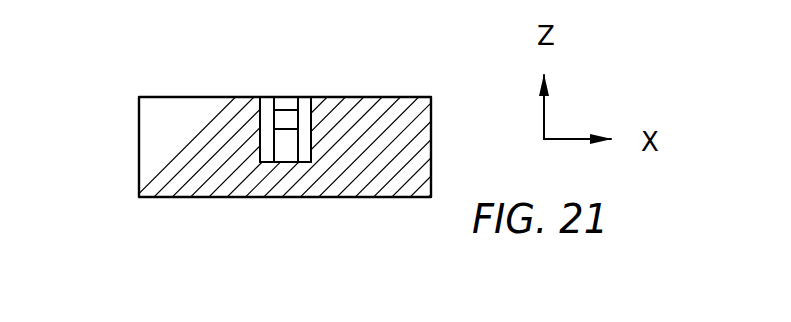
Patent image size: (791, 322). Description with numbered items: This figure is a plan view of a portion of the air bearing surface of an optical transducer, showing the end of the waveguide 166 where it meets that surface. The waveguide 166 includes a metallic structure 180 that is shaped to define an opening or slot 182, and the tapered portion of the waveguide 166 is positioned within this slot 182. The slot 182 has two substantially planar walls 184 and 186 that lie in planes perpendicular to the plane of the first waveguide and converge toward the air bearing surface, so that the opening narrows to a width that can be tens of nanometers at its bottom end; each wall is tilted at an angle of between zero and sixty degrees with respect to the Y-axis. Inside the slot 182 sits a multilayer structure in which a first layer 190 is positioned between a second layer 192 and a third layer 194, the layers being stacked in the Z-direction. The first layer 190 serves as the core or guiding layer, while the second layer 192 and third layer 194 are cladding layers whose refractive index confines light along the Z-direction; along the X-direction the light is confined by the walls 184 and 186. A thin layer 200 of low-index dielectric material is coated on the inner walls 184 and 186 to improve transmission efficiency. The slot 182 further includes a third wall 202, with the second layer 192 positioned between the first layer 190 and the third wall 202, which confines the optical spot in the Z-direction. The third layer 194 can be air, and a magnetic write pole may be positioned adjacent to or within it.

The waveguide 166 is at (424, 56).
The metallic structure 180 is at (143, 150).
The opening or slot 182 is at (283, 82).
The wall 184 is at (259, 120).
The wall 186 is at (312, 143).
The first layer 190 is at (282, 122).
The second layer 192 is at (282, 156).
The third layer 194 is at (293, 101).
The thin layer of dielectric material 200 is at (267, 102).
The third wall 202 is at (291, 163).